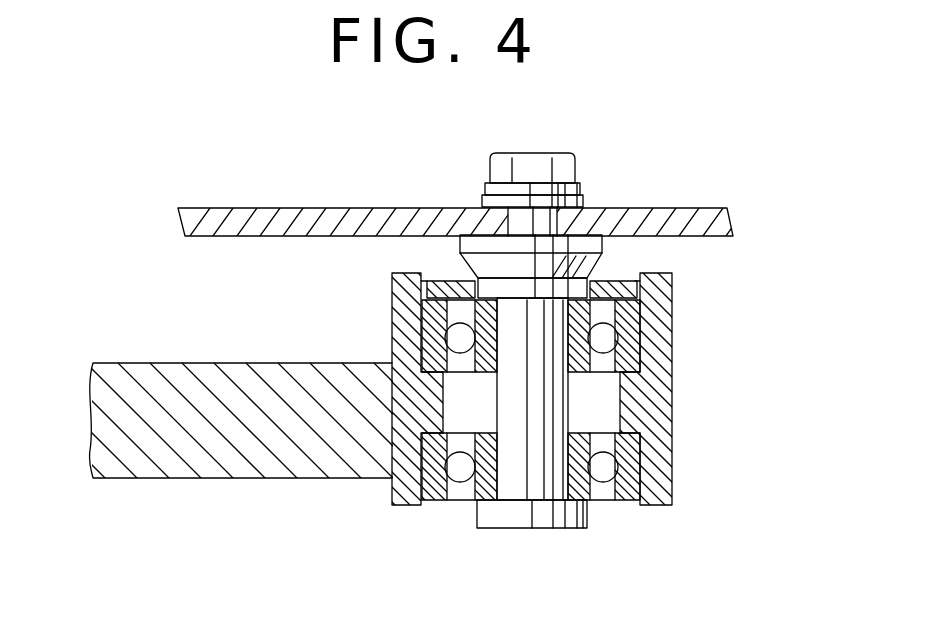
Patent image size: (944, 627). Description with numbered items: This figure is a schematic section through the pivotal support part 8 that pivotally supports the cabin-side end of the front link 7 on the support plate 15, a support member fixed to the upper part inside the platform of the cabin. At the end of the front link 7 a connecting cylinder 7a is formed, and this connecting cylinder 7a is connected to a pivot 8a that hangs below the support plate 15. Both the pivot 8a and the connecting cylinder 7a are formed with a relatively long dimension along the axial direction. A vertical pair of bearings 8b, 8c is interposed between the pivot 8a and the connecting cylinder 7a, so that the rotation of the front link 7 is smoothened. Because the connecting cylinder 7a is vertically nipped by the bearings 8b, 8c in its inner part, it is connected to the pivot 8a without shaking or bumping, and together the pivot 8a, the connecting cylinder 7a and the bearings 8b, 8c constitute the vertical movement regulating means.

The front link 7 is at (207, 479).
The connecting cylinder 7a is at (392, 506).
The pivotal support part 8 is at (585, 237).
The pivot 8a is at (535, 483).
The bearing 8b is at (437, 317).
The bearing 8c is at (440, 500).
The support plate 15 is at (288, 207).